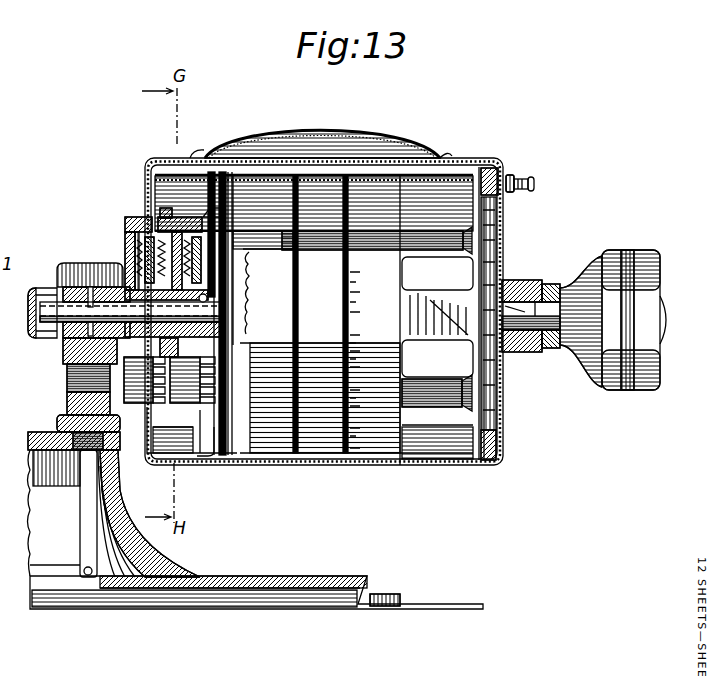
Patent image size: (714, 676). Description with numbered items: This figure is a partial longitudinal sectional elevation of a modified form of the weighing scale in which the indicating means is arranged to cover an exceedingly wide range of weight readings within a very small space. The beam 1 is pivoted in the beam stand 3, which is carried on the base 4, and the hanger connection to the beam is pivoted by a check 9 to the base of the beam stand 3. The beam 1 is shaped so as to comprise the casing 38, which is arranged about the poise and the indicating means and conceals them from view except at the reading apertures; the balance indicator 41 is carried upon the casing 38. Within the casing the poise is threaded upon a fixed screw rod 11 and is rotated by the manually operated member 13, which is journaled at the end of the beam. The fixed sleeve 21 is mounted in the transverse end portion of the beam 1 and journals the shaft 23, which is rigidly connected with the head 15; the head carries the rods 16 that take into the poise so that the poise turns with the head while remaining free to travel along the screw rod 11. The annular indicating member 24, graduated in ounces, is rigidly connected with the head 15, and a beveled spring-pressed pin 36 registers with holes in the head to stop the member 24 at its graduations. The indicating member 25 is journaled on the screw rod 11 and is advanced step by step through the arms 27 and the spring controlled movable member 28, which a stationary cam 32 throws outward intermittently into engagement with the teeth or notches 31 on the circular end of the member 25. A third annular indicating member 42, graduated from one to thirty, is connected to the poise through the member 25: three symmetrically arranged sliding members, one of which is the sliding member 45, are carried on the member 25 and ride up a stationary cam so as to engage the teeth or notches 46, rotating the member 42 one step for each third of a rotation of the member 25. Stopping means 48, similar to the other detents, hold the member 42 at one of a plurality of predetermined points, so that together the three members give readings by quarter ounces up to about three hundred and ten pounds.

The beam 1 is at (527, 282).
The beam stand 3 is at (68, 378).
The base 4 is at (180, 568).
The check 9 is at (45, 567).
The screw rod 11 is at (233, 285).
The manually operated member 13 is at (561, 287).
The head 15 is at (480, 418).
The rods 16 is at (433, 237).
The fixed sleeve 21 is at (532, 352).
The shaft 23 is at (557, 347).
The indicating member 24 is at (375, 460).
The indicating member 25 is at (313, 462).
The arms 27 is at (217, 147).
The movable member 28 is at (164, 158).
The teeth or notches 31 is at (213, 152).
The stationary cam 32 is at (208, 288).
The spring-pressed pin 36 is at (534, 183).
The casing 38 is at (500, 451).
The balance indicator 41 is at (385, 140).
The third annular indicating member 42 is at (241, 472).
The sliding member 45 is at (148, 213).
The teeth or notches 46 is at (162, 210).
The stopping means 48 is at (130, 240).